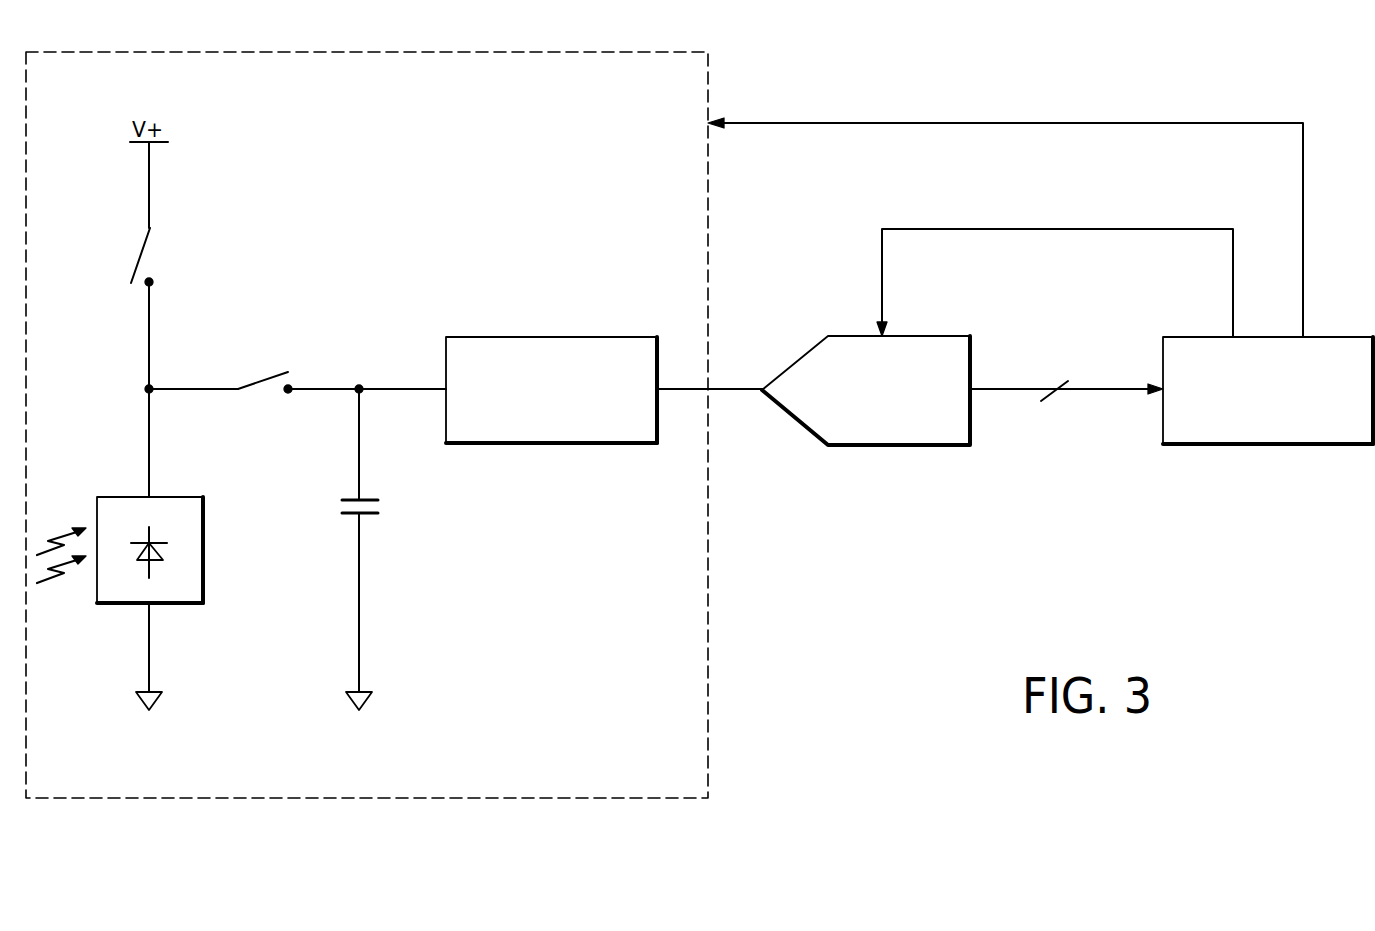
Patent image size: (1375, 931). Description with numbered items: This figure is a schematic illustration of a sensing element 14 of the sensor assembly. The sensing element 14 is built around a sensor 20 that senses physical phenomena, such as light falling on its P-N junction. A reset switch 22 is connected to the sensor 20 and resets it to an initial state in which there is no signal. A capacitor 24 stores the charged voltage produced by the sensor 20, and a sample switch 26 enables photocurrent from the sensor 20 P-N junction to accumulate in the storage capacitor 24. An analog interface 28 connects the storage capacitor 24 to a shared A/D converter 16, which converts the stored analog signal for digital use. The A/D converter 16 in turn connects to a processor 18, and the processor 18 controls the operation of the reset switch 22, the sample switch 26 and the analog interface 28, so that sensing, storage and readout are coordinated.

The sensing element 14 is at (708, 635).
The A/D converter 16 is at (890, 445).
The processor 18 is at (1274, 444).
The sensor 20 is at (190, 605).
The reset switch 22 is at (165, 235).
The capacitor 24 is at (382, 520).
The sample switch 26 is at (290, 327).
The analog interface 28 is at (537, 337).